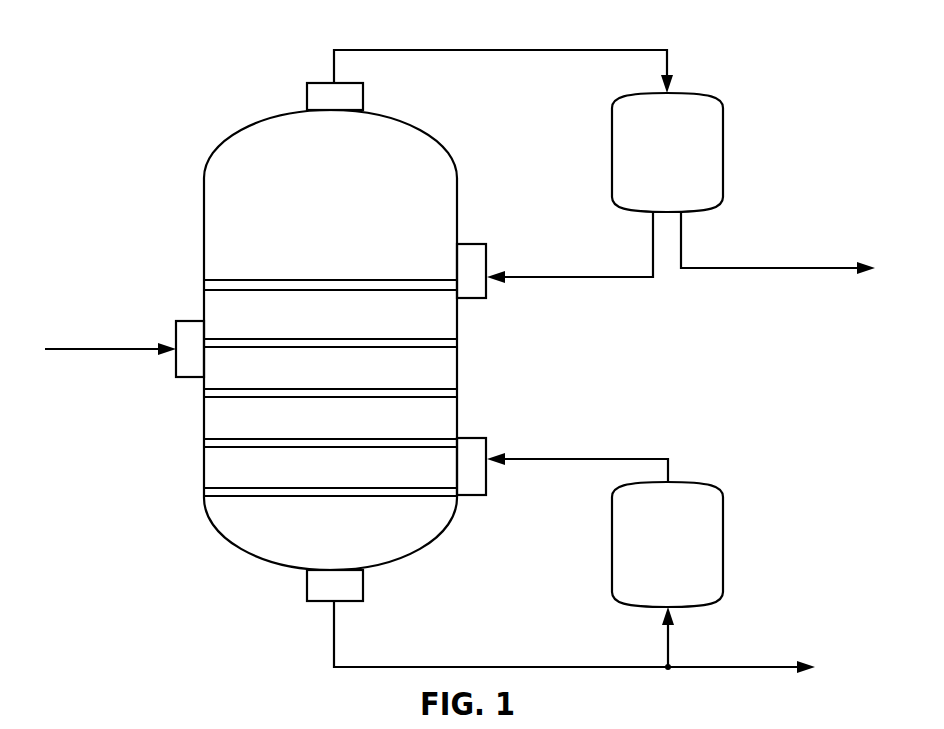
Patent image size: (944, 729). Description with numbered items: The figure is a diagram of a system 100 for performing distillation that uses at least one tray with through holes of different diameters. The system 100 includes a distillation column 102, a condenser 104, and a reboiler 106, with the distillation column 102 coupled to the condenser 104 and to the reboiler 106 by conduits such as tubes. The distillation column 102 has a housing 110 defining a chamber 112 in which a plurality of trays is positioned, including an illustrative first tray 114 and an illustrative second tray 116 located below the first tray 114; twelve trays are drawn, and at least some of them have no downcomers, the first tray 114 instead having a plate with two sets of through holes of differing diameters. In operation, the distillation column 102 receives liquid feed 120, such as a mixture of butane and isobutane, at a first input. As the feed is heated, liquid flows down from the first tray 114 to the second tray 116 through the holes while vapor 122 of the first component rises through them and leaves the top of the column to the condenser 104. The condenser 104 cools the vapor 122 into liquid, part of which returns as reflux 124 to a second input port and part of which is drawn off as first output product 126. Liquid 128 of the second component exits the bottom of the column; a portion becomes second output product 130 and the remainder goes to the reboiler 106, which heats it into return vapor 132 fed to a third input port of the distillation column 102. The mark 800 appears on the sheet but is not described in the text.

The system 100 is at (121, 68).
The distillation column 102 is at (441, 90).
The condenser 104 is at (695, 93).
The reboiler 106 is at (697, 483).
The housing 110 is at (248, 128).
The chamber 112 is at (256, 178).
The first tray 114 is at (436, 339).
The second tray 116 is at (436, 389).
The liquid feed 120 is at (65, 349).
The vapor 122 is at (540, 50).
The reflux 124 is at (548, 277).
The first output product 126 is at (740, 268).
The liquid 128 is at (410, 668).
The second output product 130 is at (735, 667).
The return vapor 132 is at (548, 459).
The sheet marker 800 is at (72, 728).